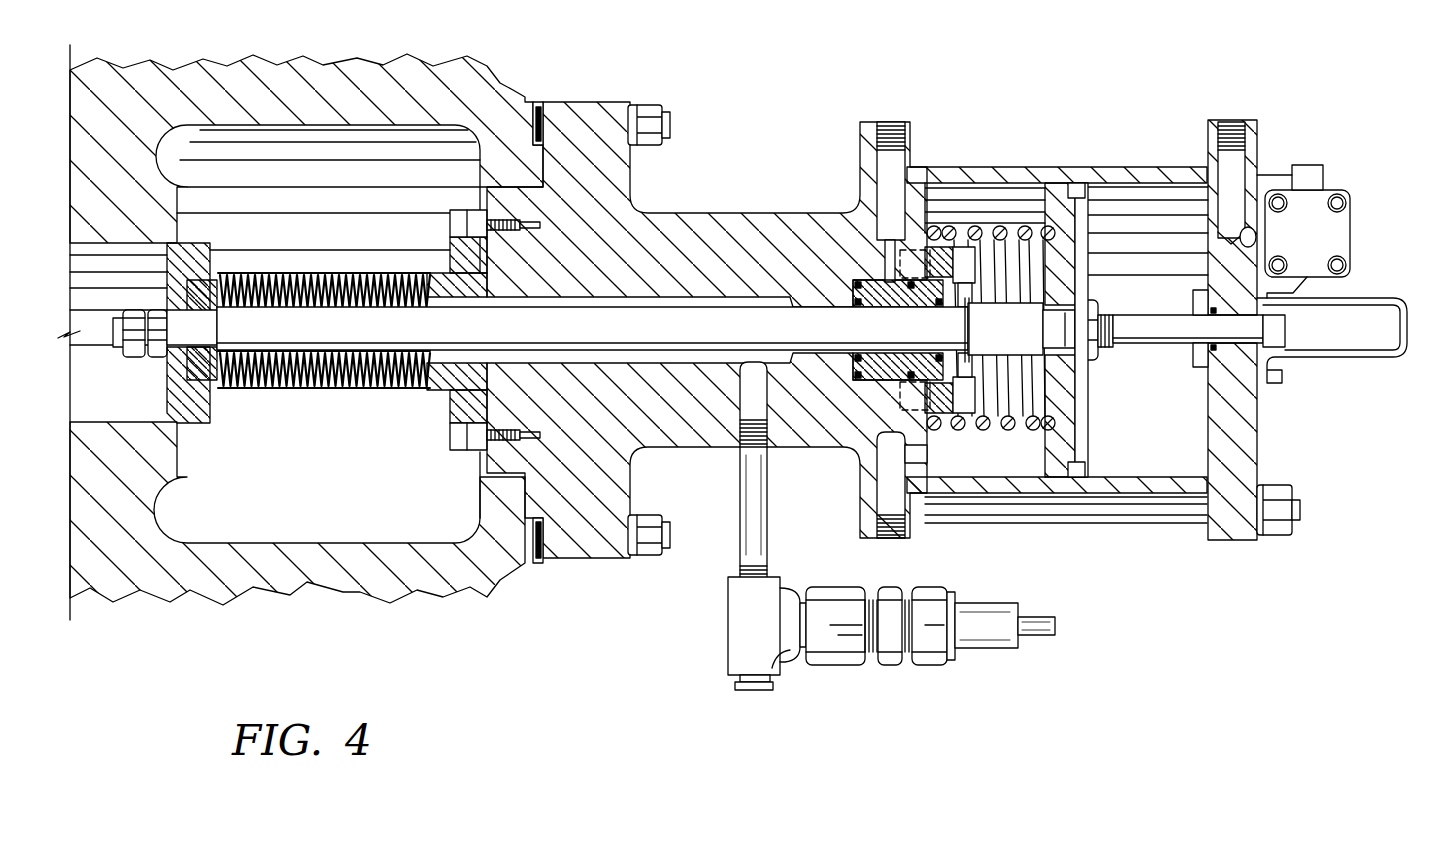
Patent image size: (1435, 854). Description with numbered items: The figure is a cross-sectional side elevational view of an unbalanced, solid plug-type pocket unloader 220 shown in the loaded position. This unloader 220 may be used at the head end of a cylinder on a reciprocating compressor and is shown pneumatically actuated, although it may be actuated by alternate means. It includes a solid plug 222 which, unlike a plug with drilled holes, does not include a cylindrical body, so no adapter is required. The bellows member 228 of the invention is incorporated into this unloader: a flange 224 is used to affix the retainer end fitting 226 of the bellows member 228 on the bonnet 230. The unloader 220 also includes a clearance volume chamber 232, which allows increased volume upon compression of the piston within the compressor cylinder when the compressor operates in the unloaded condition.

The unbalanced solid plug-type pocket unloader 220 is at (787, 378).
The solid plug 222 is at (203, 243).
The flange 224 is at (470, 212).
The retainer end fitting 226 is at (430, 390).
The bellows member 228 is at (275, 393).
The bonnet 230 is at (747, 213).
The clearance volume chamber 232 is at (366, 248).